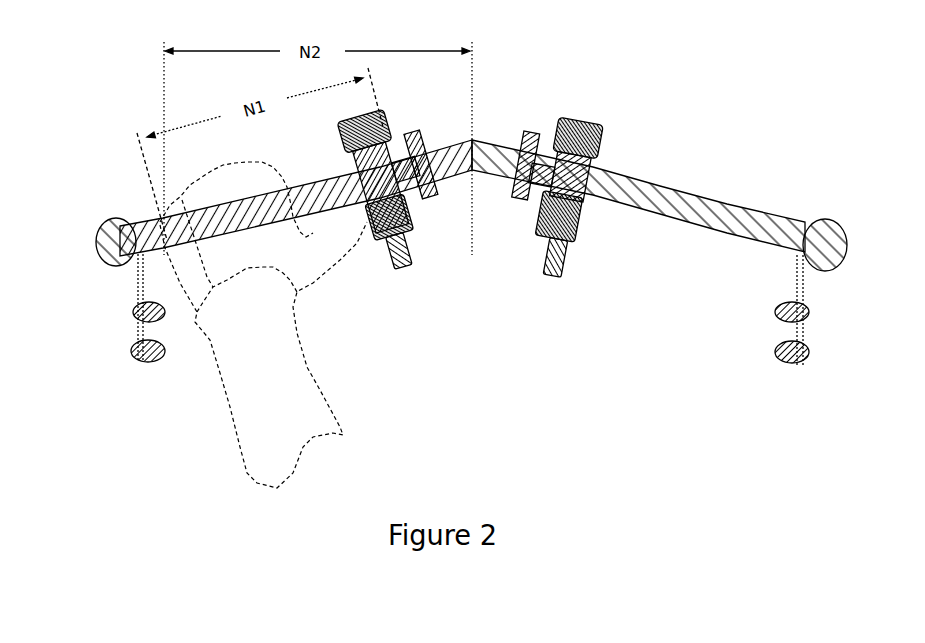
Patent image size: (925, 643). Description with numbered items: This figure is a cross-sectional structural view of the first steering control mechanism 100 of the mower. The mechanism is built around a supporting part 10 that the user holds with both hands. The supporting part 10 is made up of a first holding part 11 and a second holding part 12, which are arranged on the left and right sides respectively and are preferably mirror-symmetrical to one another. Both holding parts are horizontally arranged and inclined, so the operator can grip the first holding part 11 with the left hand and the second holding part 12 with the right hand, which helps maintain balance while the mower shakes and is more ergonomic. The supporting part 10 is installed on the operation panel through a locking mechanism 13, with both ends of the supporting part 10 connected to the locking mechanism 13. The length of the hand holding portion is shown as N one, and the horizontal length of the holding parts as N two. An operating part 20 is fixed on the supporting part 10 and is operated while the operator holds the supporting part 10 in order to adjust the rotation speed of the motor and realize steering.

The first steering control mechanism 100 is at (650, 103).
The supporting part 10 is at (478, 140).
The first holding part 11 is at (158, 235).
The second holding part 12 is at (660, 190).
The locking mechanism 13 is at (802, 330).
The operating part 20 is at (380, 247).